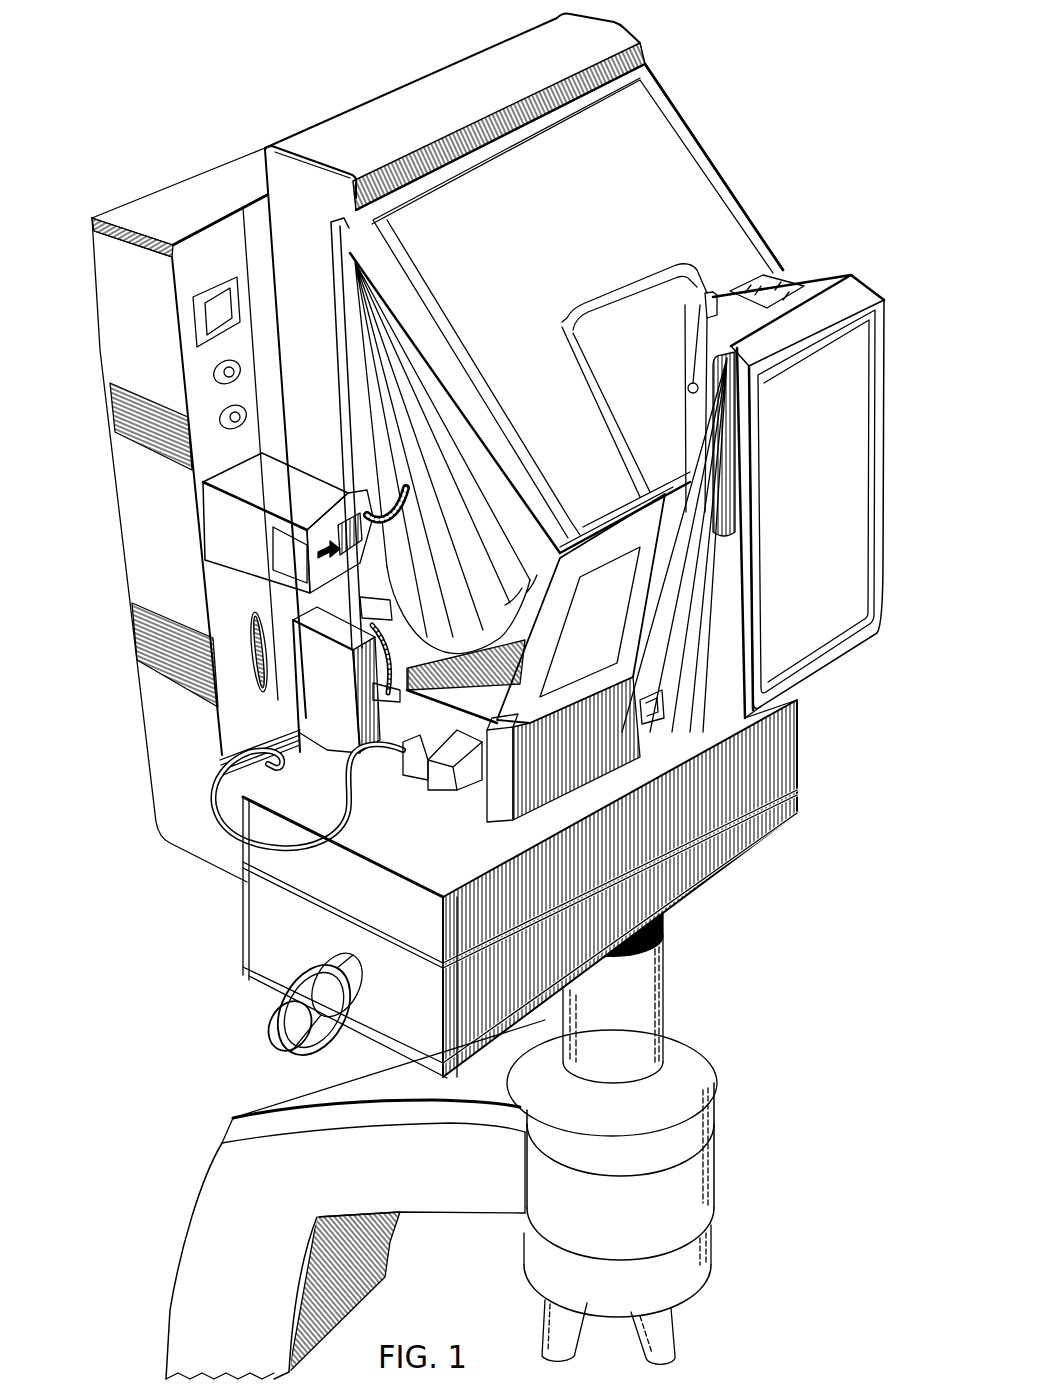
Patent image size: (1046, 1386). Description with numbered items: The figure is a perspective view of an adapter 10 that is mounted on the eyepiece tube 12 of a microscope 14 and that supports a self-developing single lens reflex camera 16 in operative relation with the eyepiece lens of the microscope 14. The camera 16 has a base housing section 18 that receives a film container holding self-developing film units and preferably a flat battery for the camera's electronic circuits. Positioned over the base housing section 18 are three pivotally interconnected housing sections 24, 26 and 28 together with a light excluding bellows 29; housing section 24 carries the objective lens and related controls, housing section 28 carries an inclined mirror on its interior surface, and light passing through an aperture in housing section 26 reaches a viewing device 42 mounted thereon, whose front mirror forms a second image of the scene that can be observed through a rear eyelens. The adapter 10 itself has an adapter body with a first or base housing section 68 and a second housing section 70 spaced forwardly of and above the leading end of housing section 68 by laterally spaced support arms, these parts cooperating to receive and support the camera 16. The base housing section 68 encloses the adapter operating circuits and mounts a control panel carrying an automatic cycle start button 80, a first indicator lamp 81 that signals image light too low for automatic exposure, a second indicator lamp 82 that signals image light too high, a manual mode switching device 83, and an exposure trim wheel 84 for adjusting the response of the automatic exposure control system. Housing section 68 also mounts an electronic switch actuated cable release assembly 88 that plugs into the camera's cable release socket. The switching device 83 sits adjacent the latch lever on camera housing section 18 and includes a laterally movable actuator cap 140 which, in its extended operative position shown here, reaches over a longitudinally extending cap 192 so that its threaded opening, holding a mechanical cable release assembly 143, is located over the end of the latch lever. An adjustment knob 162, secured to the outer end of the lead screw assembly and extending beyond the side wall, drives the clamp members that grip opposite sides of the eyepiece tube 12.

The adapter 10 is at (812, 782).
The eyepiece tube 12 is at (640, 992).
The microscope 14 is at (728, 1106).
The SX-70 Land Camera 16 is at (780, 220).
The base housing section 18 is at (292, 182).
The housing section 24 is at (503, 795).
The housing section 26 is at (610, 612).
The housing section 28 is at (687, 185).
The light excluding bellows 29 is at (427, 420).
The viewing device 42 is at (892, 600).
The base housing section 68 is at (147, 525).
The second housing section 70 is at (273, 927).
The automatic cycle start button 80 is at (223, 293).
The first indicator lamp 81 is at (223, 367).
The second indicator lamp 82 is at (242, 422).
The manual mode switching device 83 is at (240, 477).
The exposure trim wheel 84 is at (257, 687).
The cable release assembly 88 is at (380, 773).
The actuator cap 140 is at (293, 563).
The mechanical cable release assembly 143 is at (393, 503).
The adjustment knob 162 is at (290, 1022).
The longitudinally extending cap 192 is at (353, 360).